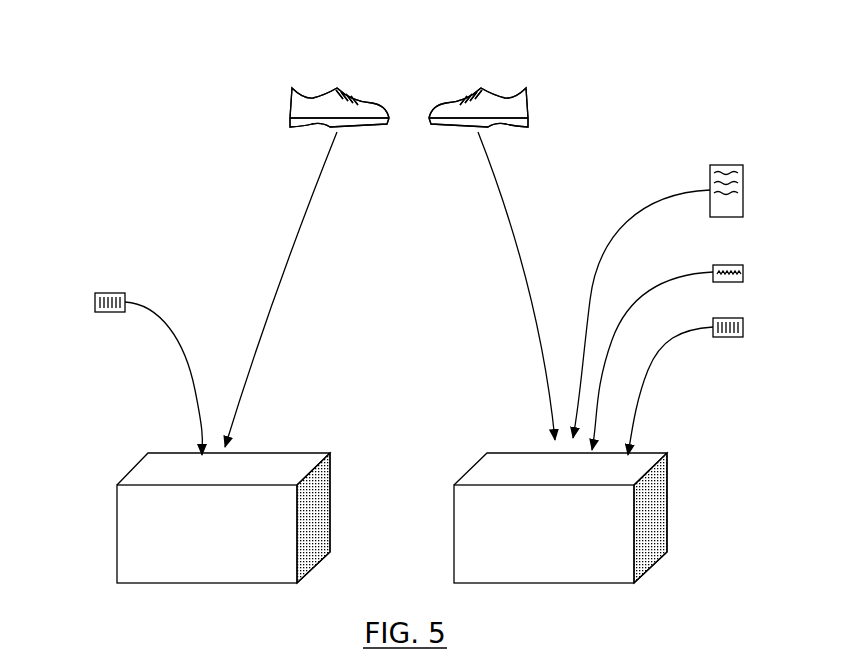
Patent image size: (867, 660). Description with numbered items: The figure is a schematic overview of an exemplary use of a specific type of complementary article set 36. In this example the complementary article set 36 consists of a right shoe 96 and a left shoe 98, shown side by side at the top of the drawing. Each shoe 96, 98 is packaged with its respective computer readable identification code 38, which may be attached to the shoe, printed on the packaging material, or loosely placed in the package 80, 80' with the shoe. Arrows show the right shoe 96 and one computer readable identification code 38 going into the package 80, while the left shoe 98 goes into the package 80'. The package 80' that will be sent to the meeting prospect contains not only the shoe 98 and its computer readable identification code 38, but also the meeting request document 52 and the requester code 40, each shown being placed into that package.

The complementary article set 36 is at (533, 73).
The right shoe 96 is at (288, 104).
The left shoe 98 is at (530, 104).
The computer readable identification code 38 is at (100, 293).
The requester code 40 is at (745, 272).
The meeting request document 52 is at (745, 173).
The package 80 is at (223, 518).
The package 80' is at (560, 518).